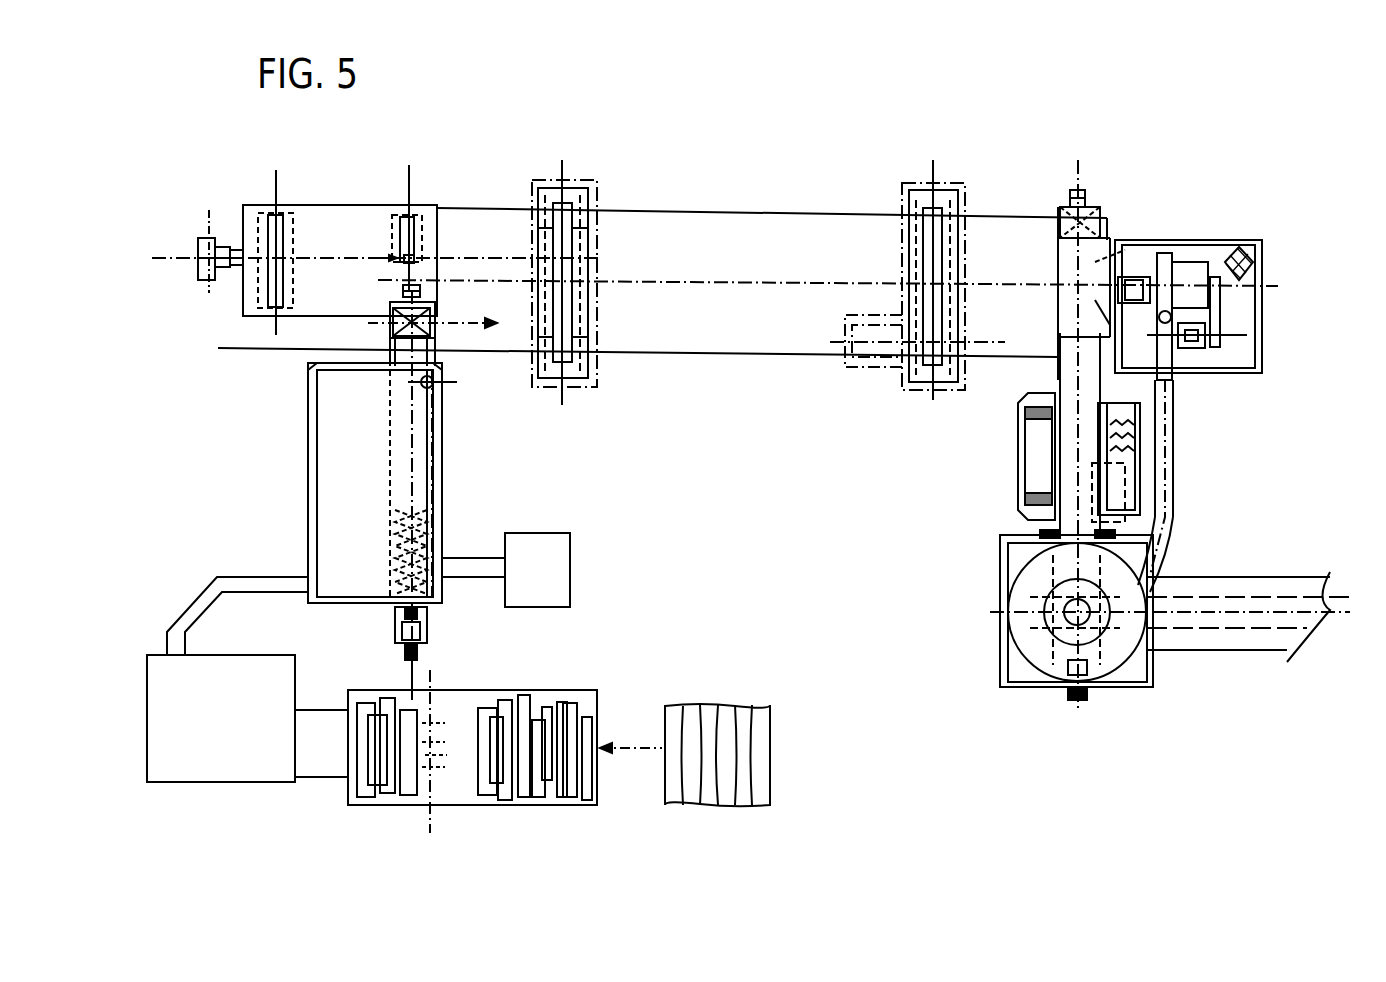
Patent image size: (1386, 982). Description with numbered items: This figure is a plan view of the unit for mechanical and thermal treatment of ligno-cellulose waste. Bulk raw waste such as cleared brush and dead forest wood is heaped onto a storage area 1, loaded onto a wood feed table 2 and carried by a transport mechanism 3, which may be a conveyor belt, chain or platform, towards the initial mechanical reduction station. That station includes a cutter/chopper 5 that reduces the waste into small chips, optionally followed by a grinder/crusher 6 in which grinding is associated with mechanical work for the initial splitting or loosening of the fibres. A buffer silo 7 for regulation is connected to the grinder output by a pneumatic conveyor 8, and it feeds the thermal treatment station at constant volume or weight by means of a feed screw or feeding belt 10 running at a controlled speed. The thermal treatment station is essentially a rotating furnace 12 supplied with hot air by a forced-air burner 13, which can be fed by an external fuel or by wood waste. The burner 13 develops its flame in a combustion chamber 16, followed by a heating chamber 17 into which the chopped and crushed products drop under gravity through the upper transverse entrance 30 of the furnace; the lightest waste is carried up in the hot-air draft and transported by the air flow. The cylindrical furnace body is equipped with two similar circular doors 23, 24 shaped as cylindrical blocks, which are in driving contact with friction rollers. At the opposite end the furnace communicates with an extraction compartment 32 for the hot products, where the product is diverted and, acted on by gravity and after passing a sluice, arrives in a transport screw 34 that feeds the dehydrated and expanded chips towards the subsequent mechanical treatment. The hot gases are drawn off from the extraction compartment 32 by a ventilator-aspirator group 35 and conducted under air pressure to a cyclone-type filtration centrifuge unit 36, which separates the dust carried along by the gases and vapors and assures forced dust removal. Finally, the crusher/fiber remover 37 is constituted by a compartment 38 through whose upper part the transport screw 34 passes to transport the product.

The storage area 1 is at (722, 690).
The wood feed table 2 is at (567, 826).
The transport mechanism 3 is at (442, 788).
The cutter/chopper 5 is at (248, 755).
The grinder/crusher 6 is at (543, 573).
The buffer silo 7 is at (322, 532).
The pneumatic conveyor 8 is at (195, 610).
The feed screw or feeding belt 10 is at (403, 490).
The rotating furnace 12 is at (708, 198).
The forced-air burner 13 is at (188, 224).
The combustion chamber 16 is at (327, 245).
The heating chamber 17 is at (448, 238).
The circular door 23 is at (568, 360).
The circular door 24 is at (927, 363).
The upper transverse entrance 30 is at (373, 330).
The extraction compartment 32 is at (1113, 252).
The transport screw 34 is at (1230, 612).
The ventilator-aspirator group 35 is at (1183, 283).
The cyclone-type filtration centrifuge unit 36 is at (1033, 625).
The crusher/fiber remover 37 is at (1025, 462).
The compartment 38 is at (1037, 466).